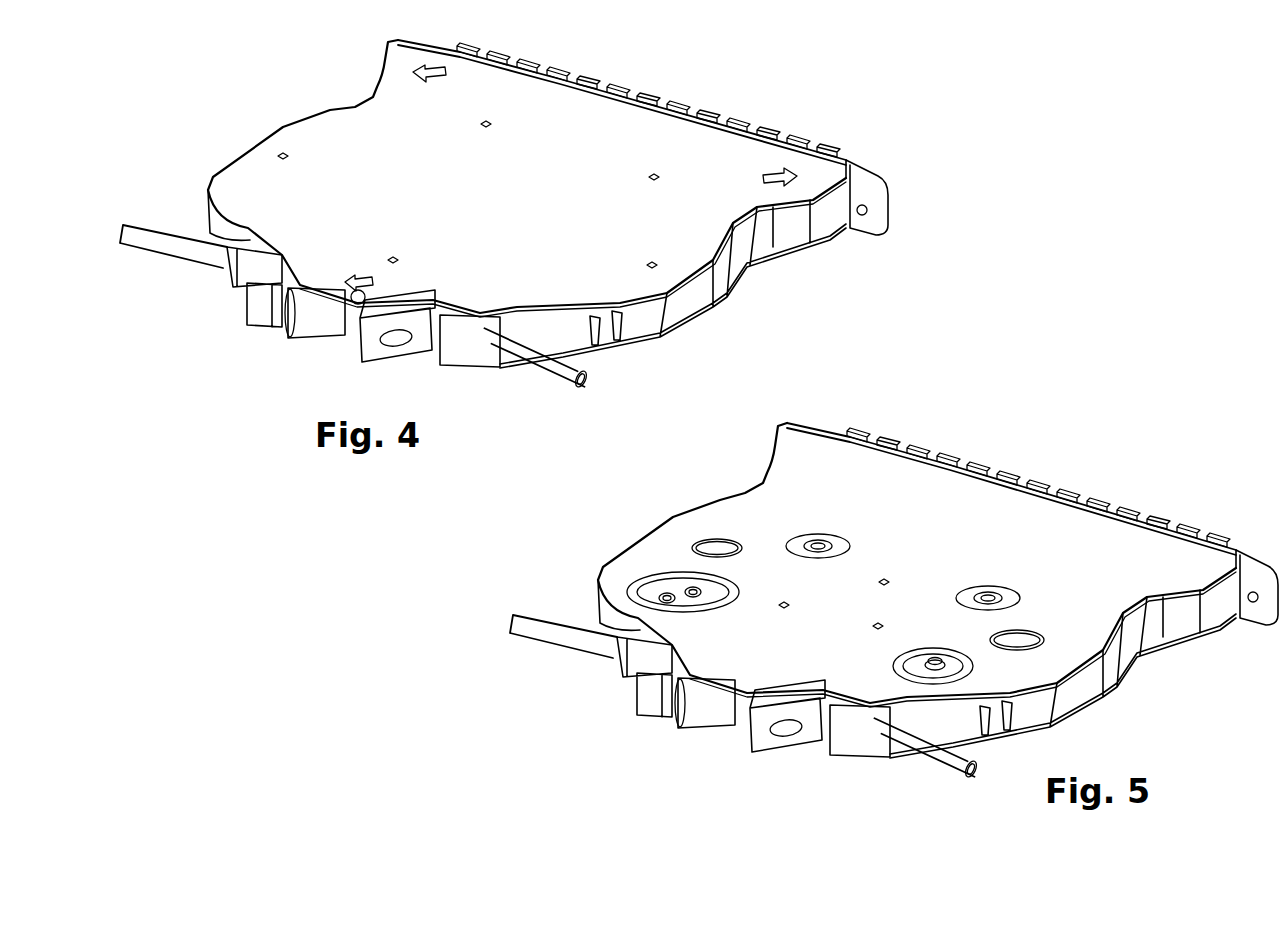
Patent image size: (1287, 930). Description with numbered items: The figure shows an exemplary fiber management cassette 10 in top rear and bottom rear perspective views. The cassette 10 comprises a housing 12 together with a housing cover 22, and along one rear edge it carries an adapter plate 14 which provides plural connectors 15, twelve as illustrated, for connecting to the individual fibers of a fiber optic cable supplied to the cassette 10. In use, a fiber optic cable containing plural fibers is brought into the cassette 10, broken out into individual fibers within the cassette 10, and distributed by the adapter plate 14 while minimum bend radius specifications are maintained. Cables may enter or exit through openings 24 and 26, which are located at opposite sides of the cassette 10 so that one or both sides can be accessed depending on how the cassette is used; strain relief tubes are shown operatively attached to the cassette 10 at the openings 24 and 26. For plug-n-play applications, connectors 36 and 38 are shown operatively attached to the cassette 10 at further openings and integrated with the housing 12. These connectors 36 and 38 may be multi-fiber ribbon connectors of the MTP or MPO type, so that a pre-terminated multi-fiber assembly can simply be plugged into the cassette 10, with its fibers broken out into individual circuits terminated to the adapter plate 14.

In FIG. 4, the fiber management cassette 10 is at (914, 200).
In FIG. 5, the fiber management cassette 10 is at (1127, 708).
In FIG. 5, the housing 12 is at (915, 547).
In FIG. 4, the adapter plate 14 is at (630, 77).
In FIG. 5, the adapter plate 14 is at (1076, 484).
In FIG. 4, the connectors 15 is at (532, 53).
In FIG. 5, the connectors 15 is at (1006, 470).
In FIG. 4, the housing cover 22 is at (485, 224).
In FIG. 4, the opening 24 is at (537, 360).
In FIG. 5, the opening 24 is at (557, 640).
In FIG. 4, the opening 26 is at (177, 250).
In FIG. 5, the opening 26 is at (915, 750).
In FIG. 4, the connector 36 is at (398, 350).
In FIG. 5, the connector 36 is at (647, 697).
In FIG. 4, the connector 38 is at (262, 322).
In FIG. 5, the connector 38 is at (784, 735).